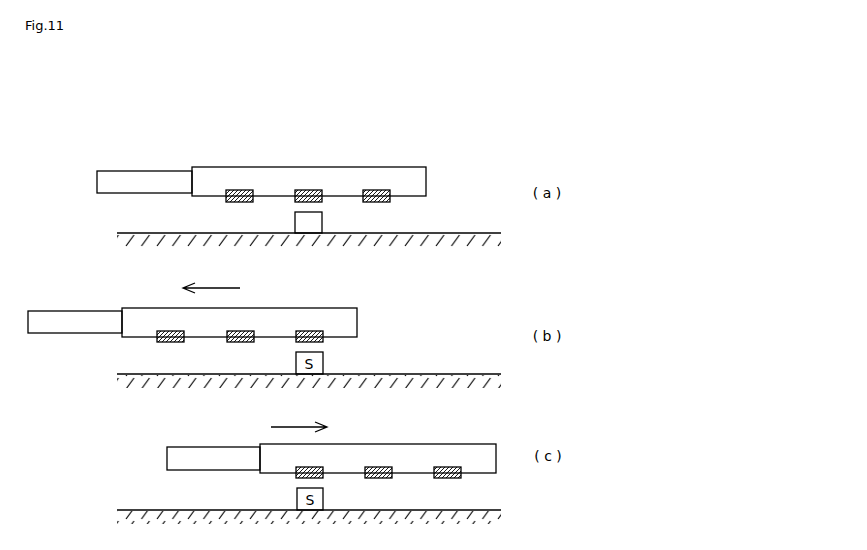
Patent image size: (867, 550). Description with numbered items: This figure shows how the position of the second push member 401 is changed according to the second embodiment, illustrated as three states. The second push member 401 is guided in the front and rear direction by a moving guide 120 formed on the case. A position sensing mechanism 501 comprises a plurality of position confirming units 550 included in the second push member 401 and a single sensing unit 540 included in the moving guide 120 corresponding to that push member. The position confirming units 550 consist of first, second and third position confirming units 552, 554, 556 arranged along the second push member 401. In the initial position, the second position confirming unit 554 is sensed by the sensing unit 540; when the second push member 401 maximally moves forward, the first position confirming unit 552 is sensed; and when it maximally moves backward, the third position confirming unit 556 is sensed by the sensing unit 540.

The second push member 401 is at (142, 180).
The position sensing mechanism 501 is at (410, 93).
The position confirming units 550 is at (308, 149).
The first position confirming unit 552 is at (240, 191).
The second position confirming unit 554 is at (307, 191).
The third position confirming unit 556 is at (369, 165).
The sensing unit 540 is at (322, 223).
The moving guide 120 is at (473, 238).